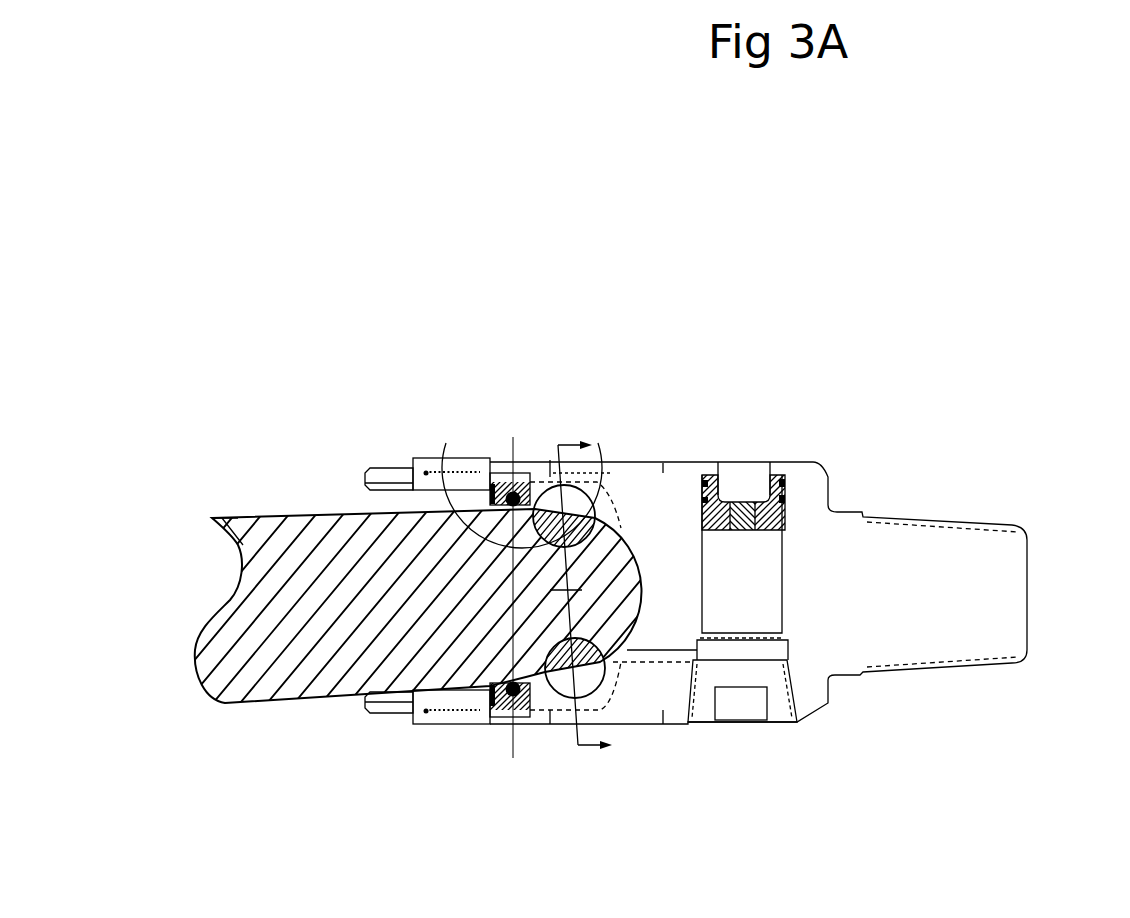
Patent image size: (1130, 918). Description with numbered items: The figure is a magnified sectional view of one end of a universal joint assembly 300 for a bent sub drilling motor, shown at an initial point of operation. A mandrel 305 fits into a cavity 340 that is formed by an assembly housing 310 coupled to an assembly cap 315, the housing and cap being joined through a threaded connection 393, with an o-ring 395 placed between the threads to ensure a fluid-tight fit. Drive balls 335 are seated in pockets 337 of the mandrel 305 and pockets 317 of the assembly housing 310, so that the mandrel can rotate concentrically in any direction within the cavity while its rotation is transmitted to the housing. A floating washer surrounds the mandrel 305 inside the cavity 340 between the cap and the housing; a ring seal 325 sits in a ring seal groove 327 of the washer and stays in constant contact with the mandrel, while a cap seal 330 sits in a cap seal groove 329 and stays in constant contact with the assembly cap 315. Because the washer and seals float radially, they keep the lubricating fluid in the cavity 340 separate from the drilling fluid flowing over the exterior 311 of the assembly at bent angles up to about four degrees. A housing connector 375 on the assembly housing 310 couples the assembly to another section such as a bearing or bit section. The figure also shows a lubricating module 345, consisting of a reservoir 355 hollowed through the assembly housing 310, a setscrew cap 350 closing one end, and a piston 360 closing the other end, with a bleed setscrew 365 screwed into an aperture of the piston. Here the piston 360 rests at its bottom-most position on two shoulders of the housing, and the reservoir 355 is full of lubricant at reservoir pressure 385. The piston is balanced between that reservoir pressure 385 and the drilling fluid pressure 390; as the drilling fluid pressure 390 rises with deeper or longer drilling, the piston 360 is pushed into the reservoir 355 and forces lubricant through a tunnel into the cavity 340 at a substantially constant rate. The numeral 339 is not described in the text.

The universal joint assembly 300 is at (972, 190).
The mandrel 305 is at (242, 518).
The assembly housing 310 is at (858, 684).
The exterior 311 is at (343, 491).
The assembly cap 315 is at (385, 473).
The pockets of the assembly housing 317 is at (600, 478).
The ring seal 325 is at (535, 716).
The ring seal groove 327 is at (508, 745).
The cap seal groove 329 is at (485, 718).
The cap seal 330 is at (445, 716).
The drive balls 335 is at (610, 692).
The pockets of the mandrel 337 is at (458, 473).
The upper ball 339 is at (500, 478).
The cavity 340 is at (620, 492).
The lubricating module 345 is at (798, 722).
The setscrew cap 350 is at (778, 702).
The reservoir 355 is at (663, 470).
The piston 360 is at (713, 557).
The bleed setscrew 365 is at (760, 500).
The housing connector 375 is at (968, 665).
The reservoir pressure 385 is at (758, 593).
The fluid pressure 390 is at (735, 467).
The threaded connection 393 is at (440, 470).
The o-ring 395 is at (415, 712).